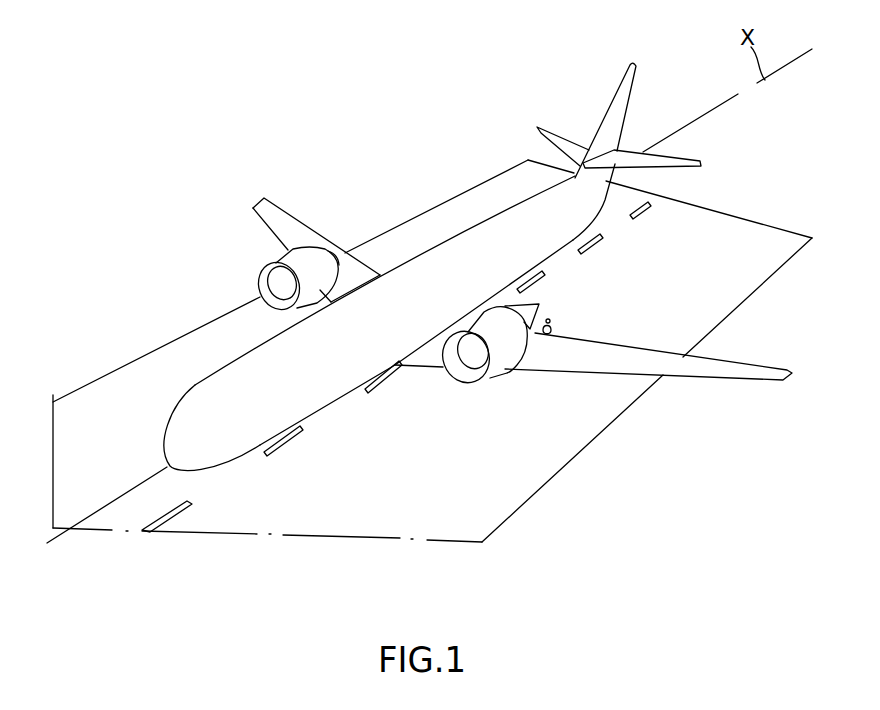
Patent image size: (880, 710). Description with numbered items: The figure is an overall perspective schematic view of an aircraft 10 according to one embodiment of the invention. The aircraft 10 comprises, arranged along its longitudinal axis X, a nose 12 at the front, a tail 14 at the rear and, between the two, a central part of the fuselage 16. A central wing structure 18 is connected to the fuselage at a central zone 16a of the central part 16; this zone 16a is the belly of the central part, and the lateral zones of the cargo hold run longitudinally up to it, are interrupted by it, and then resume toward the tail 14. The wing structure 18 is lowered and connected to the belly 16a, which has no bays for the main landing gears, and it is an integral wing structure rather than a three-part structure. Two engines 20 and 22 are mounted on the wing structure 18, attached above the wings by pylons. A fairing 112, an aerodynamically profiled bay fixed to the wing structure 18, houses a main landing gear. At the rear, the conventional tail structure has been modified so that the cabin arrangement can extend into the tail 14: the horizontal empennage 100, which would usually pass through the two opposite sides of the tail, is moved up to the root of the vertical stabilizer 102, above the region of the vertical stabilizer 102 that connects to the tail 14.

The aircraft 10 is at (337, 425).
The nose 12 is at (185, 388).
The tail 14 is at (605, 215).
The central part of the fuselage 16 is at (430, 246).
The central zone of the central part 16a is at (357, 287).
The central wing structure 18 is at (685, 349).
The engine 20 is at (495, 380).
The engine 22 is at (270, 262).
The horizontal empennage 100 is at (565, 134).
The vertical stabilizer 102 is at (624, 113).
The fairing 112 is at (539, 307).